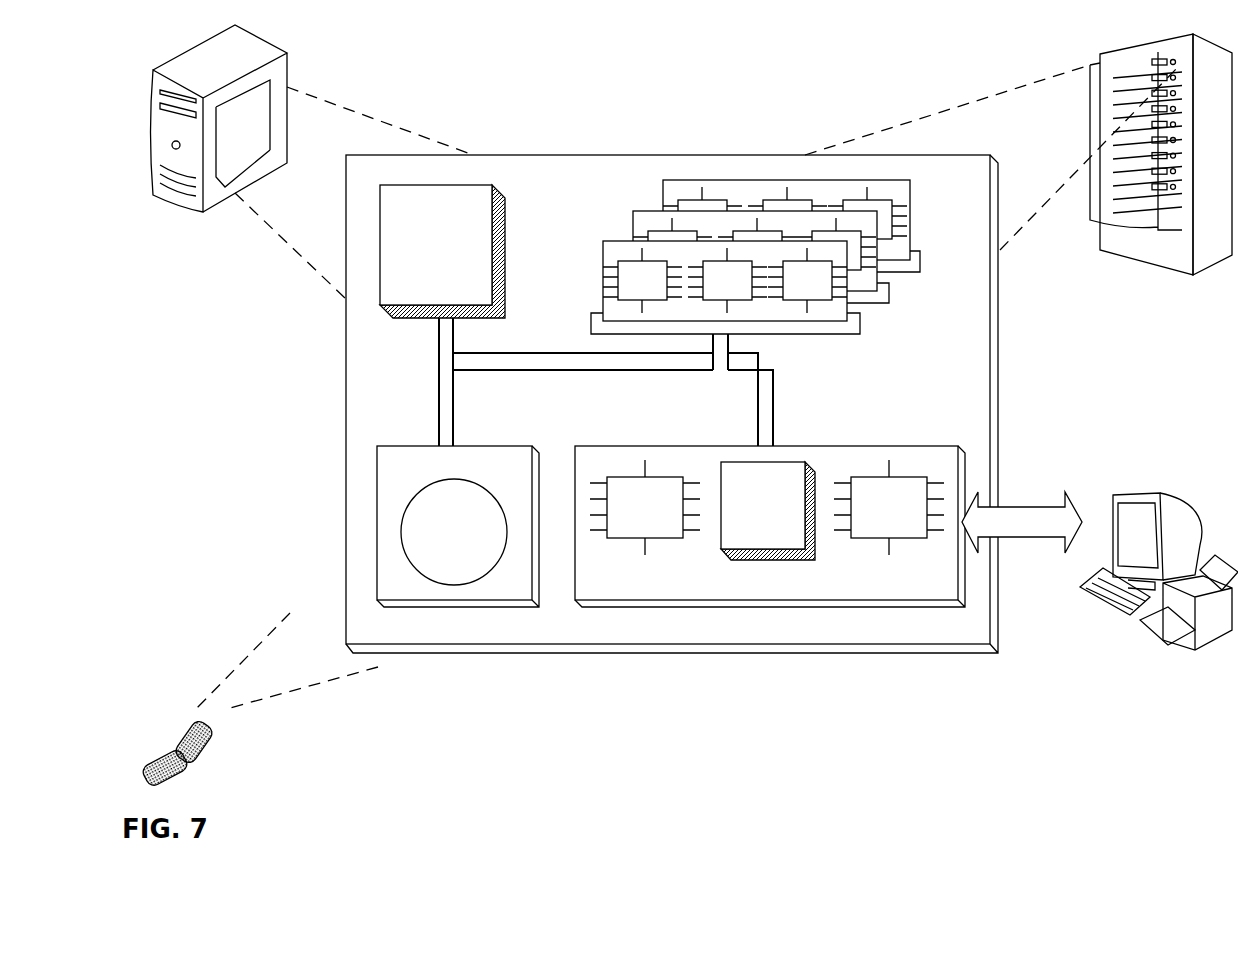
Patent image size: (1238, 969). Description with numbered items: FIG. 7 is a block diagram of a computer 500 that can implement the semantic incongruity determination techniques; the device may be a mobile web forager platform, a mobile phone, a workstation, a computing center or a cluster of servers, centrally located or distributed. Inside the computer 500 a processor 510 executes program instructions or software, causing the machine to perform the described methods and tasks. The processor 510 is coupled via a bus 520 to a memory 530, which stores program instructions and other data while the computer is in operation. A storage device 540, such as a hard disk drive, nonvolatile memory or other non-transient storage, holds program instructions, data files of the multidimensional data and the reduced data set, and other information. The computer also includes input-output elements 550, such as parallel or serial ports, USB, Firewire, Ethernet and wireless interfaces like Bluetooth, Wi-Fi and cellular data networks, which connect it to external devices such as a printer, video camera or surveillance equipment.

The computer 500 is at (571, 106).
The processor 510 is at (442, 251).
The bus 520 is at (775, 402).
The memory 530 is at (900, 198).
The storage device 540 is at (458, 526).
The input-output elements 550 is at (828, 526).